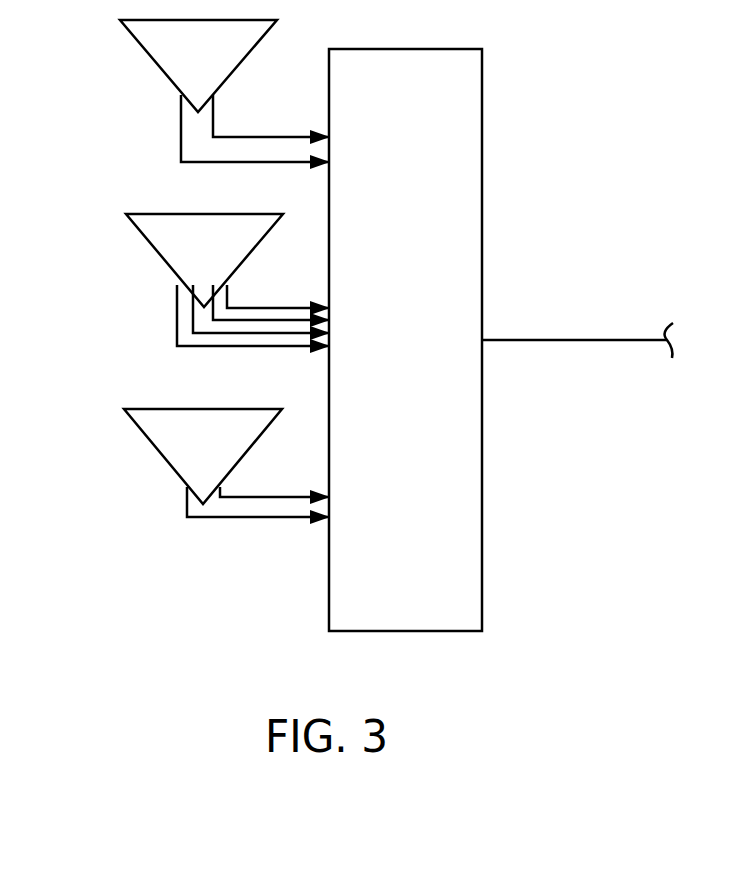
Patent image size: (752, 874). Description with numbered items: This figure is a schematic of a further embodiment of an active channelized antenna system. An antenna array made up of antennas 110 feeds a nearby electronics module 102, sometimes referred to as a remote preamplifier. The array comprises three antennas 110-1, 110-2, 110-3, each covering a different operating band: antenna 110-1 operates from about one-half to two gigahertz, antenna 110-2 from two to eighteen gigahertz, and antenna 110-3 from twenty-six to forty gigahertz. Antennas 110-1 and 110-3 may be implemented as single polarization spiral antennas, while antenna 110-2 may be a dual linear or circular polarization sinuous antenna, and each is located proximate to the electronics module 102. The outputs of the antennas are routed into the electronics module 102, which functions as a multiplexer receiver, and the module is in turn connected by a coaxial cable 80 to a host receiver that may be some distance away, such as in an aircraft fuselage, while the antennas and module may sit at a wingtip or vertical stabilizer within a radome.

The electronics module 102 is at (420, 631).
The cable 80 is at (594, 340).
The antenna 110-1 is at (160, 67).
The antenna 110-2 is at (162, 260).
The antenna 110-3 is at (160, 450).
The antennas 110 is at (219, 621).